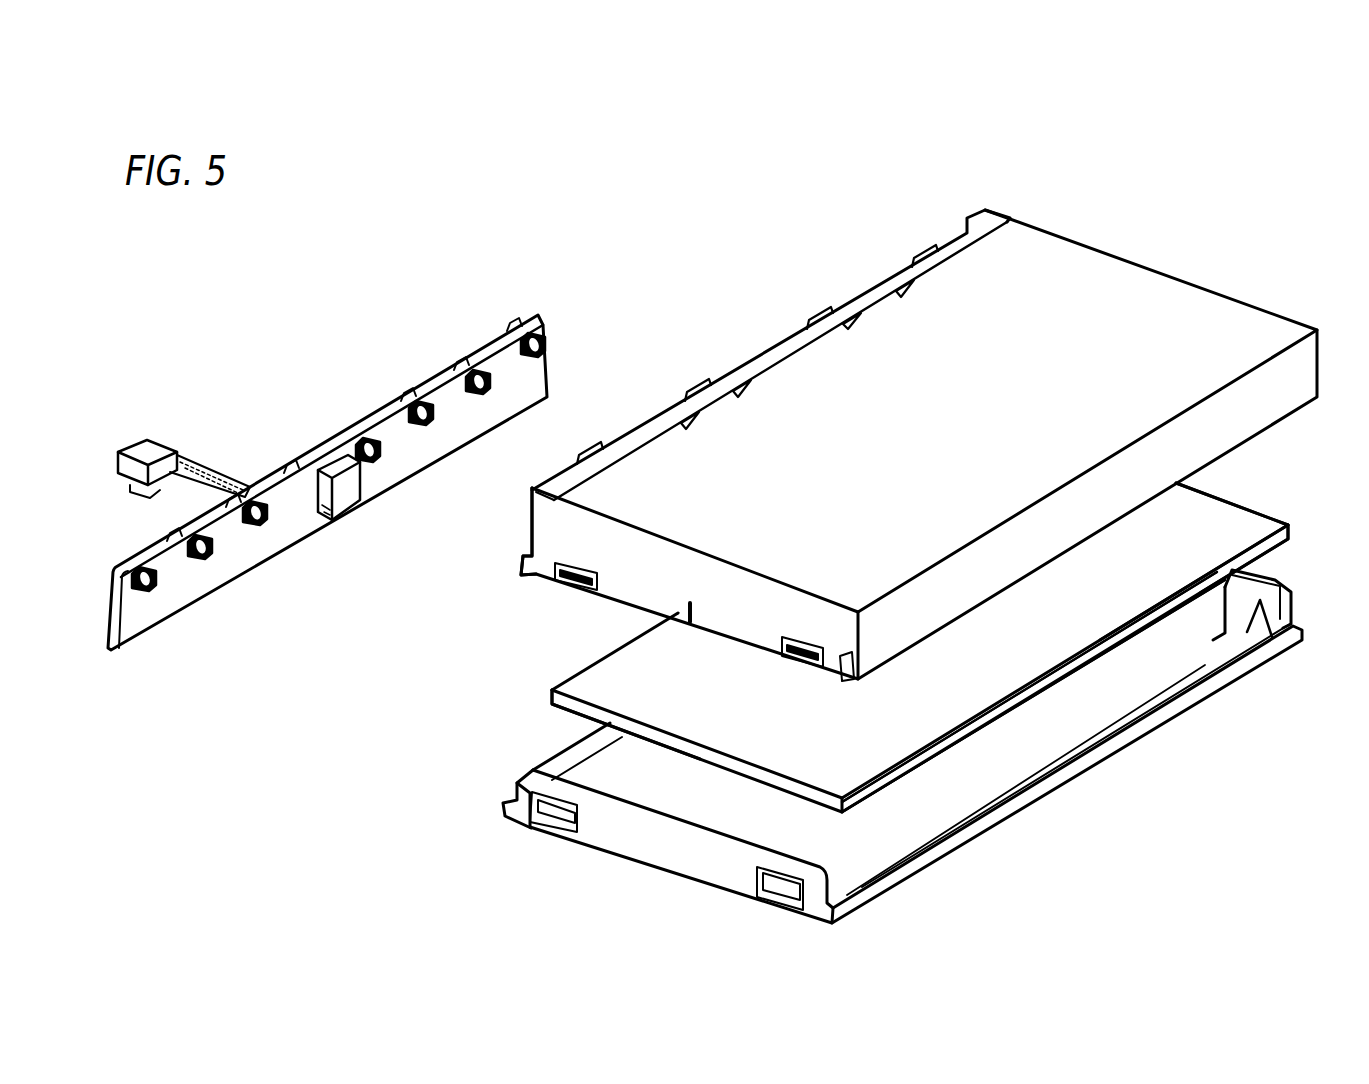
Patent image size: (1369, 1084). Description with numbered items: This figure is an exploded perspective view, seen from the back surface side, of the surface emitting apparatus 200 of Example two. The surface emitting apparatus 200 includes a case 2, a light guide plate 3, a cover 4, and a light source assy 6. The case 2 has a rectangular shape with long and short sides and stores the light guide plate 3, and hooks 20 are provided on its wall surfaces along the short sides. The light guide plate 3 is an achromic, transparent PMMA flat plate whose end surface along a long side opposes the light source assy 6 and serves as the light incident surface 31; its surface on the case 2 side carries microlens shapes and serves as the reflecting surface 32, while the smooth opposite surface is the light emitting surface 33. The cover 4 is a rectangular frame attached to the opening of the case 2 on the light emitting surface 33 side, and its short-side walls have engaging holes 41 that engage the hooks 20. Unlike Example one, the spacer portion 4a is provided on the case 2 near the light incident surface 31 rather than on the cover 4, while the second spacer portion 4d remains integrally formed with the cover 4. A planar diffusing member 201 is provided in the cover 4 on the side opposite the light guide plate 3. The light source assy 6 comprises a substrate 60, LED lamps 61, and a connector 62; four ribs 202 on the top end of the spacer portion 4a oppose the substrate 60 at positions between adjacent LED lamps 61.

The surface emitting apparatus 200 is at (1173, 156).
The case 2 is at (1143, 265).
The ribs 202 is at (930, 252).
The hooks 20 is at (780, 662).
The spacer portion 4a is at (526, 533).
The light guide plate 3 is at (1223, 502).
The light incident surface 31 is at (552, 702).
The reflecting surface 32 is at (1257, 528).
The light emitting surface 33 is at (1282, 546).
The cover 4 is at (1265, 648).
The second spacer portion 4d is at (1247, 630).
The diffusing member 201 is at (940, 763).
The engaging holes 41 is at (780, 898).
The light source assy 6 is at (540, 318).
The substrate 60 is at (545, 380).
The LED lamps 61 is at (477, 370).
The connector 62 is at (343, 493).